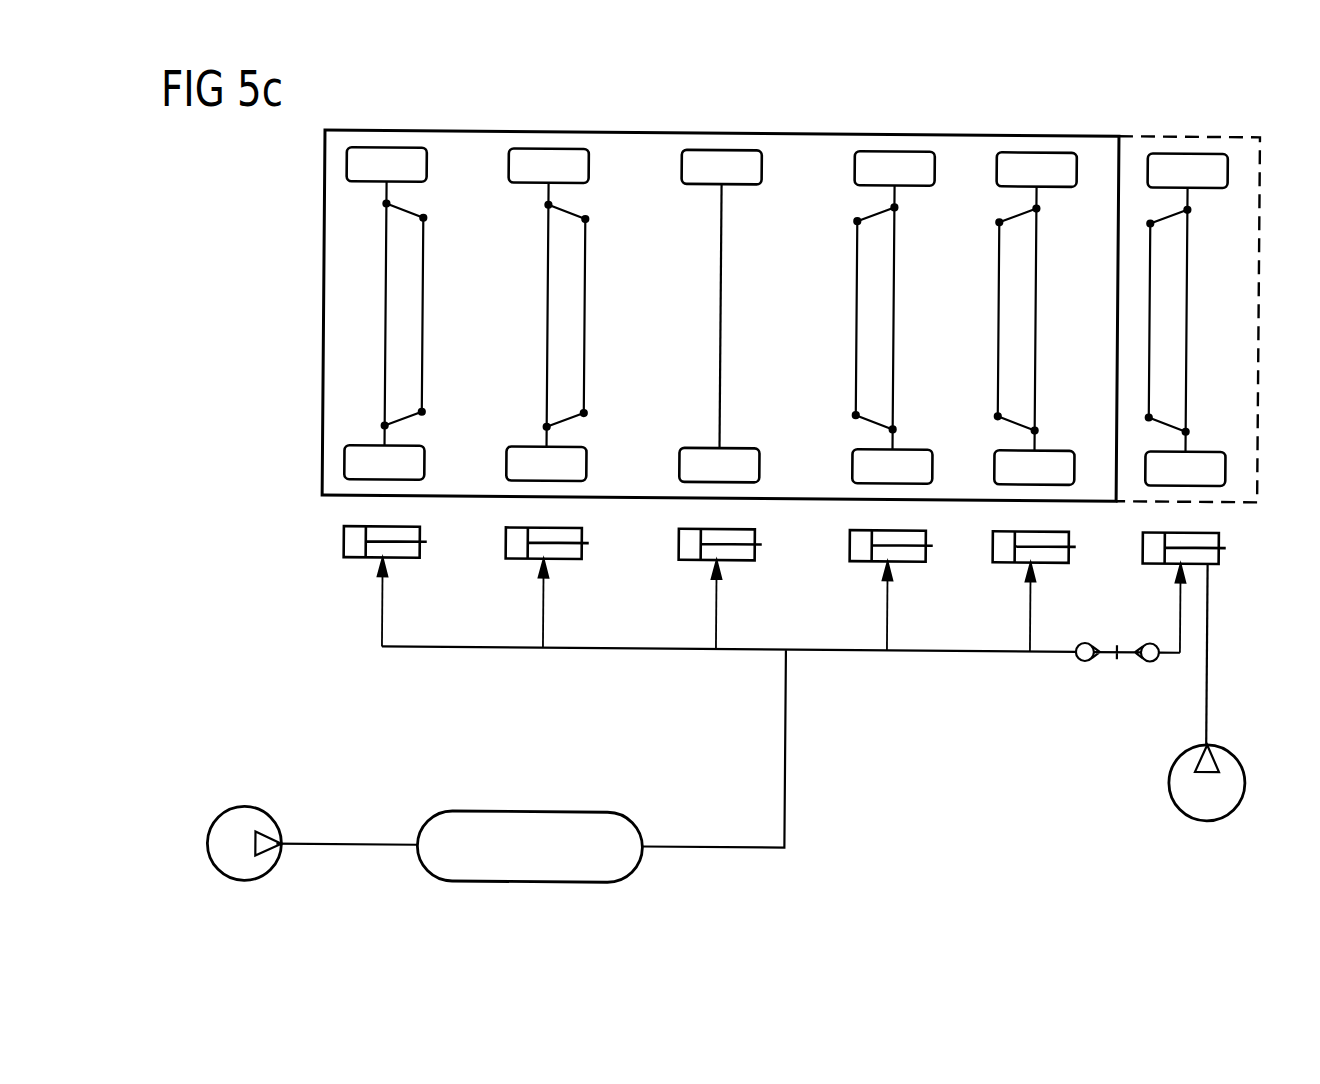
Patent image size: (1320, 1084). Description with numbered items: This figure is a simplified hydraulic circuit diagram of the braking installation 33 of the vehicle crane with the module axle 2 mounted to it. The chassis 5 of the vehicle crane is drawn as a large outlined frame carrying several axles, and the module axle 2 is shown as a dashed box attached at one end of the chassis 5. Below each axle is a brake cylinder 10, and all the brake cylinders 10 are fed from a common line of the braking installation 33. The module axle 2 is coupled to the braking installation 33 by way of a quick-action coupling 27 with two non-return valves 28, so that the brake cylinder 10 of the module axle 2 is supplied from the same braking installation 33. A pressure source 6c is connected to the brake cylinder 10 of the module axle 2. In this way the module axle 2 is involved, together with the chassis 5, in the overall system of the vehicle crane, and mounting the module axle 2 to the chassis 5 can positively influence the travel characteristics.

The module axle 2 is at (1198, 130).
The chassis 5 is at (325, 308).
The brake cylinders 10 is at (410, 557).
The quick-action coupling 27 is at (1134, 630).
The non-return valves 28 is at (1154, 656).
The braking installation 33 is at (623, 646).
The pump 6c is at (1242, 746).